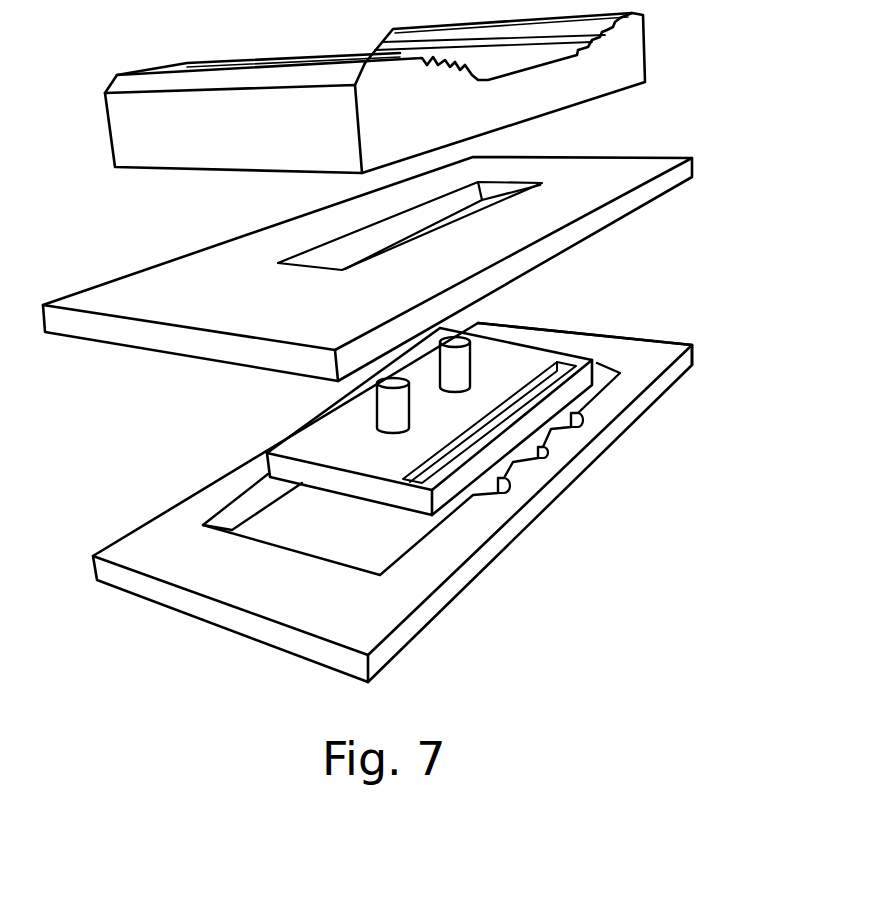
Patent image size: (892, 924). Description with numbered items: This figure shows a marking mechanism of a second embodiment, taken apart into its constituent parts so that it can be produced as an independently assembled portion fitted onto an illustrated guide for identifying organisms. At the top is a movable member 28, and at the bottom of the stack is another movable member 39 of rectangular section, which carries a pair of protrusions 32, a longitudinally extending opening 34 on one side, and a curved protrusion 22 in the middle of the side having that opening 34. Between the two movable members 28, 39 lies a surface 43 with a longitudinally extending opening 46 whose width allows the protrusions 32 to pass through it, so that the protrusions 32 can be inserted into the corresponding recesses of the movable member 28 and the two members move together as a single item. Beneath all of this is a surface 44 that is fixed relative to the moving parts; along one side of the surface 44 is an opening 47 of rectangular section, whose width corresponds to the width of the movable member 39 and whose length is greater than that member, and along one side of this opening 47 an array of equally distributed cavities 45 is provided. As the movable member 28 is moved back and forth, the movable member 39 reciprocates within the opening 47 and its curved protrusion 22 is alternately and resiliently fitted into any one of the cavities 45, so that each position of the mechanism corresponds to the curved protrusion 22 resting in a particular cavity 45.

The movable member 28 is at (656, 53).
The surface 43 is at (122, 274).
The longitudinally extending opening 46 is at (405, 227).
The surface 44 is at (190, 622).
The movable member 39 is at (541, 344).
The opening 47 is at (298, 513).
The cavities 45 is at (582, 427).
The curved protrusion 22 is at (541, 437).
The longitudinally extending opening 34 is at (452, 455).
The protrusions 32 is at (470, 342).